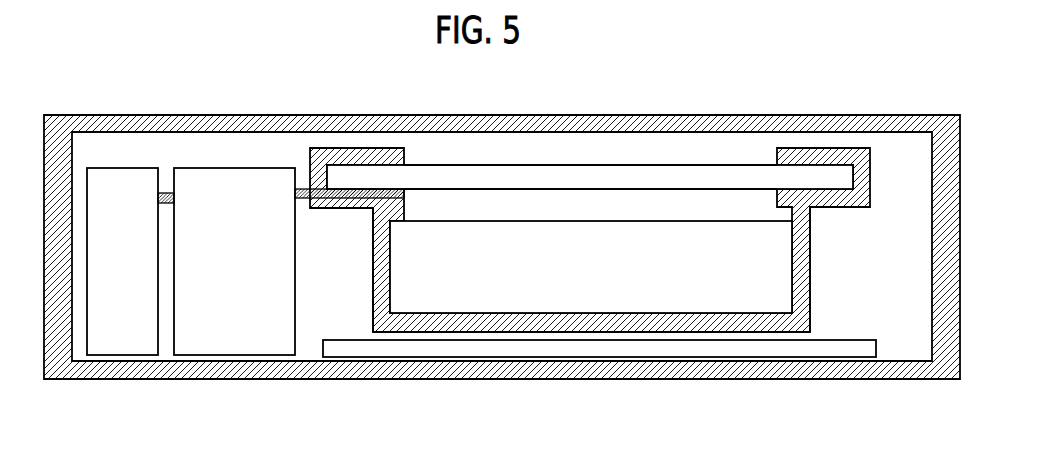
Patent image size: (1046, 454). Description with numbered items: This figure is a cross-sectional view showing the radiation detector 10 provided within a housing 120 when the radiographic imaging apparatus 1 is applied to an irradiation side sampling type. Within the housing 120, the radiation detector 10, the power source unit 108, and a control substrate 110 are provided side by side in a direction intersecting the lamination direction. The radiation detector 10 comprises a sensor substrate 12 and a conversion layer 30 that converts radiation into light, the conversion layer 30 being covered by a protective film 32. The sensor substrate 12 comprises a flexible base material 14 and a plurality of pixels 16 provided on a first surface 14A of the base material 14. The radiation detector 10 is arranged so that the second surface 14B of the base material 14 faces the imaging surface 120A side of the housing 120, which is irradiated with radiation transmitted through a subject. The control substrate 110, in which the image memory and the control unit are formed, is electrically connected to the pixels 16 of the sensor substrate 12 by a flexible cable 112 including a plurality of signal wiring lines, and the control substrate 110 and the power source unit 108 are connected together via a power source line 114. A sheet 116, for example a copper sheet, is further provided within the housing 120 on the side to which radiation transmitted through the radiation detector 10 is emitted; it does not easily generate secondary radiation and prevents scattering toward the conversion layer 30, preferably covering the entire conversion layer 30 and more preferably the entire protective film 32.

The radiographic imaging apparatus 1 is at (928, 433).
The radiation detector 10 is at (722, 142).
The sensor substrate 12 is at (898, 165).
The base material 14 is at (837, 177).
The first surface 14A is at (373, 212).
The second surface 14B is at (548, 163).
The pixels 16 is at (755, 209).
The conversion layer 30 is at (777, 256).
The protective film 32 is at (810, 295).
The power source unit 108 is at (110, 180).
The control substrate 110 is at (227, 178).
The cable 112 is at (337, 200).
The power source line 114 is at (165, 193).
The sheet 116 is at (862, 350).
The housing 120 is at (447, 117).
The imaging surface 120A is at (623, 105).